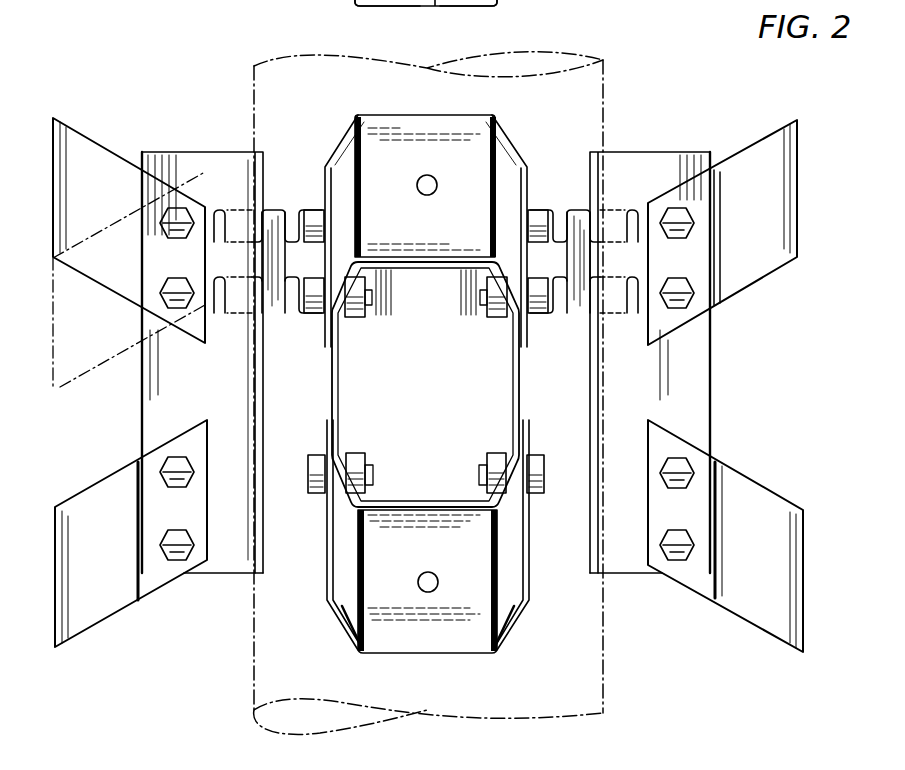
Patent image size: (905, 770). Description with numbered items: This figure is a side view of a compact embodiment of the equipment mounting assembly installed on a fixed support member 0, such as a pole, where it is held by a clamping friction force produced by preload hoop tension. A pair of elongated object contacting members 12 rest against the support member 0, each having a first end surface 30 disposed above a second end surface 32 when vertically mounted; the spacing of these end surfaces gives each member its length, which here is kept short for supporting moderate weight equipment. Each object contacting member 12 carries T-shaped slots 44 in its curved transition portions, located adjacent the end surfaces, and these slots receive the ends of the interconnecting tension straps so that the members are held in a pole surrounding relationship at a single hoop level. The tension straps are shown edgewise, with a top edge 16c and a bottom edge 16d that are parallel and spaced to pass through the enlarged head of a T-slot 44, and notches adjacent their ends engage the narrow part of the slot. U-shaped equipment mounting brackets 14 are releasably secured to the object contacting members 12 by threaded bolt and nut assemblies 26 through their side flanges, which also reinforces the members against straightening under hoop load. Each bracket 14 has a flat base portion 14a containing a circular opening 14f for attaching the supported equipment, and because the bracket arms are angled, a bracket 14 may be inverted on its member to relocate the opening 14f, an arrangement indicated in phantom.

The fixed support member 0 is at (600, 685).
The object contacting member 12 is at (700, 357).
The equipment mounting bracket 14 is at (96, 144).
The base portion 14a is at (468, 7).
The circular opening 14f is at (422, 7).
The top edge 16c is at (542, 315).
The bottom edge 16d is at (578, 210).
The bolt and nut assembly 26 is at (167, 528).
The first end surface 30 is at (690, 152).
The second end surface 32 is at (630, 577).
The T-shaped slot 44 is at (637, 208).